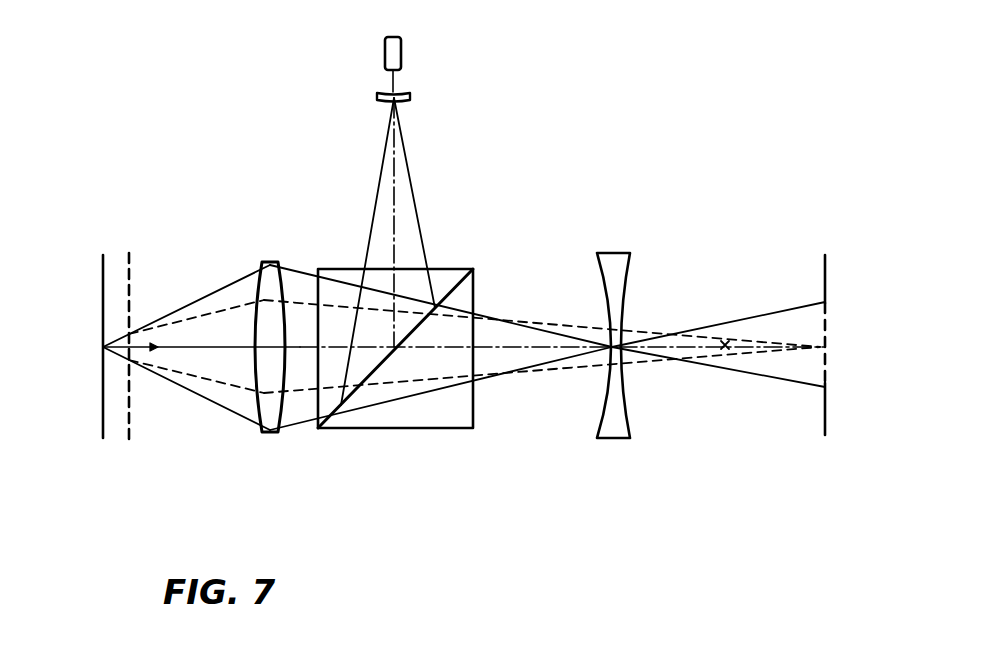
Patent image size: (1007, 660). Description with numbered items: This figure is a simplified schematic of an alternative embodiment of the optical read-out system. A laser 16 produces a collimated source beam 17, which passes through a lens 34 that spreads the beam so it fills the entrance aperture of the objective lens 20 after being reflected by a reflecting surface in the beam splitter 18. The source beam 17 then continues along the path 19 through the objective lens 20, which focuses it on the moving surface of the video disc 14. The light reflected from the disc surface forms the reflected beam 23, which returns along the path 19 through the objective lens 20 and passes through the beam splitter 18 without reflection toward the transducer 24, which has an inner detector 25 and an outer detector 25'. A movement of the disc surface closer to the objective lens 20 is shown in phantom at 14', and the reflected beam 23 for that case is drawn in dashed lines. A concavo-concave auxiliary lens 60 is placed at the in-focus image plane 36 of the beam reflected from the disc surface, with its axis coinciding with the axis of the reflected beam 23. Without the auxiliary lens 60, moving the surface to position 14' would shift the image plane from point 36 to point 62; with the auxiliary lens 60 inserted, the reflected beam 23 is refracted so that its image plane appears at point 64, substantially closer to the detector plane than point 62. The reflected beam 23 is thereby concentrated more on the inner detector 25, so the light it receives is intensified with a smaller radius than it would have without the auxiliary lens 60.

The video disc 14 is at (75, 346).
The displaced surface position of the video disc 14' is at (162, 346).
The laser 16 is at (402, 53).
The source beam 17 is at (393, 83).
The beam splitter 18 is at (443, 268).
The path 19 is at (228, 350).
The objective lens 20 is at (270, 262).
The reflected beam 23 is at (512, 348).
The transducer 24 is at (832, 407).
The inner detector 25 is at (854, 350).
The outer detector 25' is at (830, 363).
The lens 34 is at (410, 98).
The in-focus image plane 36 is at (615, 345).
The auxiliary lens 60 is at (627, 252).
The image plane point without auxiliary lens 62 is at (714, 352).
The image plane point with auxiliary lens 64 is at (822, 350).